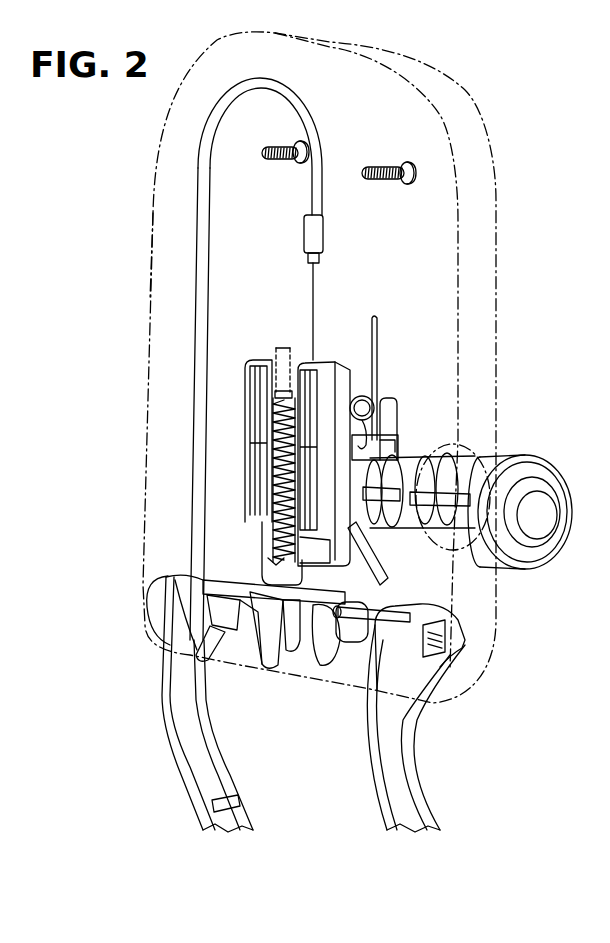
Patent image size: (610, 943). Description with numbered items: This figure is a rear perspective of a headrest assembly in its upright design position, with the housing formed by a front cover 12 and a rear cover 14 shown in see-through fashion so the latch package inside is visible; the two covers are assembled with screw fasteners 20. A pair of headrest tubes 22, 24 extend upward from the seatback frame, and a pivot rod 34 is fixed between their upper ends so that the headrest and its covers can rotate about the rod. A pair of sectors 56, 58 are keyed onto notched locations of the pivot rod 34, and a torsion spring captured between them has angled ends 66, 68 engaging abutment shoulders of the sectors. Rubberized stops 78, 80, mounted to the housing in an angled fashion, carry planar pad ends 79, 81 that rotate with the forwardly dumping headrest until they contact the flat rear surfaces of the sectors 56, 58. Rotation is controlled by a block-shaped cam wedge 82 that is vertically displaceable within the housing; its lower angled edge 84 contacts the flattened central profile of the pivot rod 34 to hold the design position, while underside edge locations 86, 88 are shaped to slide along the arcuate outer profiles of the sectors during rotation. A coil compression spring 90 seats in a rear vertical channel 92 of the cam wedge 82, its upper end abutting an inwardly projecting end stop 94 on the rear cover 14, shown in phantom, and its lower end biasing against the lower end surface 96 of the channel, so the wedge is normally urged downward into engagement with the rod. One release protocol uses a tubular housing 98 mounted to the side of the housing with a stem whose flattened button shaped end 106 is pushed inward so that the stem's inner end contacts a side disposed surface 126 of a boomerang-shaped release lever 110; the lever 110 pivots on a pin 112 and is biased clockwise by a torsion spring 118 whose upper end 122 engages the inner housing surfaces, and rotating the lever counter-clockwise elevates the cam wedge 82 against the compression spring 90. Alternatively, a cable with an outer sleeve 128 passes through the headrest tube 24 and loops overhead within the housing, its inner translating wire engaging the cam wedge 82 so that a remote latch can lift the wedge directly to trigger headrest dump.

The front cover 12 is at (468, 110).
The rear cover 14 is at (155, 187).
The screw fasteners 20 is at (265, 150).
The headrest tube 22 is at (385, 795).
The headrest tube 24 is at (190, 790).
The pivot rod 34 is at (370, 605).
The sector 56 is at (337, 650).
The sector 58 is at (237, 655).
The angled spring end 66 is at (305, 660).
The angled spring end 68 is at (220, 583).
The rubberized stop 78 is at (262, 662).
The pad end 79 is at (290, 645).
The rubberized stop 80 is at (195, 660).
The pad end 81 is at (205, 580).
The cam wedge 82 is at (249, 373).
The angled edge 84 is at (338, 612).
The underside edge location 86 is at (370, 552).
The underside edge location 88 is at (256, 535).
The compression spring 90 is at (273, 460).
The vertical channel 92 is at (273, 410).
The end stop 94 is at (270, 358).
The lower end surface 96 is at (270, 557).
The tubular housing 98 is at (473, 480).
The button shaped end 106 is at (540, 515).
The release lever 110 is at (375, 440).
The pin 112 is at (362, 398).
The torsion spring 118 is at (385, 405).
The upper spring end 122 is at (378, 318).
The side disposed surface 126 is at (385, 445).
The outer sleeve 128 is at (230, 86).